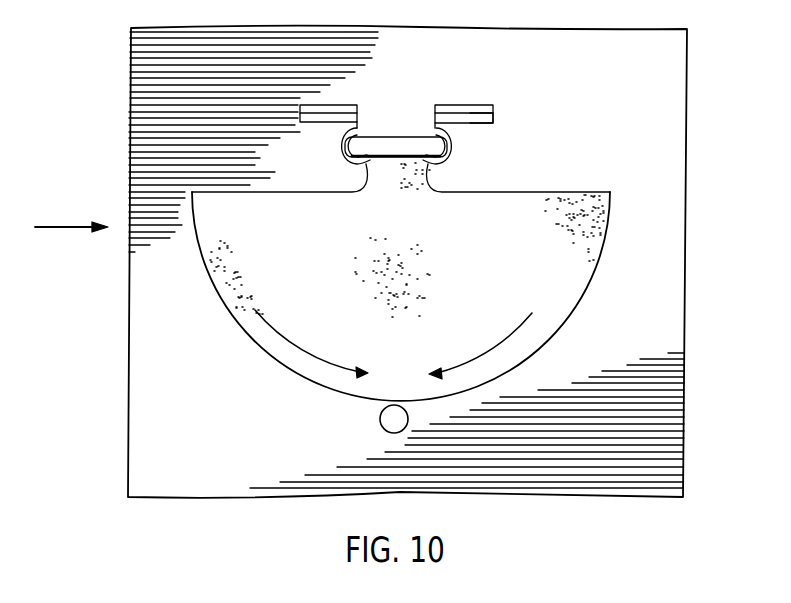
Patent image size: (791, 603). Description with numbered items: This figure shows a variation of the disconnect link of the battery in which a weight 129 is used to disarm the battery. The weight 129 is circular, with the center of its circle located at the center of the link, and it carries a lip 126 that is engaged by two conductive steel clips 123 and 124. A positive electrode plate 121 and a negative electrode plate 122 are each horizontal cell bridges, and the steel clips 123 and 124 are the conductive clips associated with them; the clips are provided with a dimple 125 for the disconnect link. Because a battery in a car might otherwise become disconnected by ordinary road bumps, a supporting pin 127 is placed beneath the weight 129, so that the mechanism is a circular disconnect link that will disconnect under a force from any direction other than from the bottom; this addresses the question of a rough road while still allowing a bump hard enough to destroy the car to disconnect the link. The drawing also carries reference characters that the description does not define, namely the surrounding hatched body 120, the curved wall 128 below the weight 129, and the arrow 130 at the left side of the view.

The mold block 120 is at (611, 93).
The positive electrode plate 121 is at (350, 105).
The negative electrode plate 122 is at (473, 105).
The conductive steel clip 123 is at (482, 123).
The conductive steel clip 124 is at (329, 126).
The dimple 125 is at (407, 161).
The lip 126 is at (456, 142).
The supporting pin 127 is at (392, 418).
The curved chamber wall 128 is at (267, 358).
The weight 129 is at (329, 277).
The flow direction arrow 130 is at (80, 227).